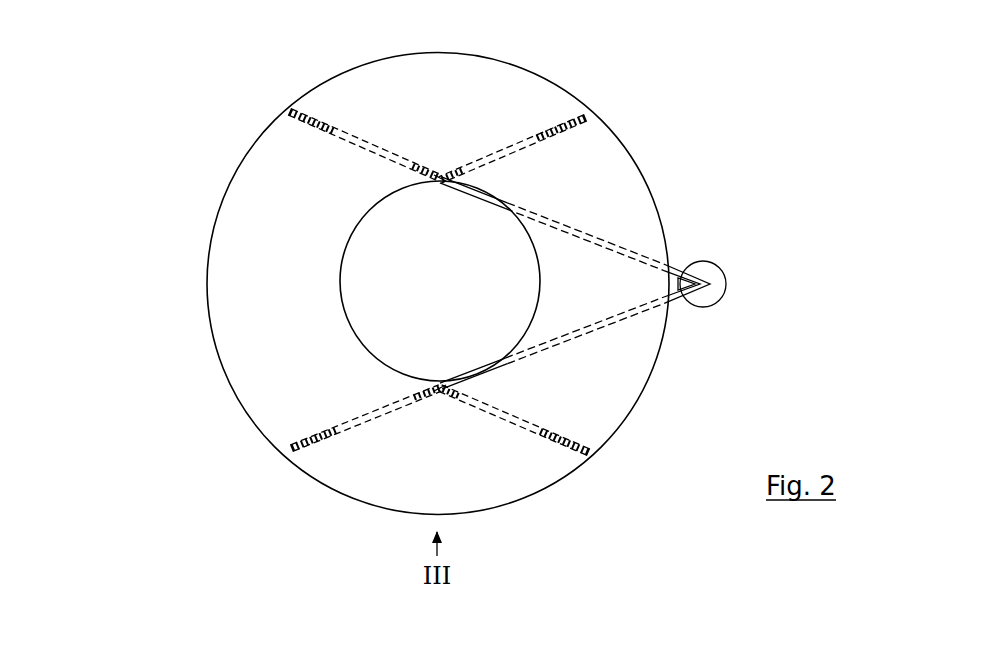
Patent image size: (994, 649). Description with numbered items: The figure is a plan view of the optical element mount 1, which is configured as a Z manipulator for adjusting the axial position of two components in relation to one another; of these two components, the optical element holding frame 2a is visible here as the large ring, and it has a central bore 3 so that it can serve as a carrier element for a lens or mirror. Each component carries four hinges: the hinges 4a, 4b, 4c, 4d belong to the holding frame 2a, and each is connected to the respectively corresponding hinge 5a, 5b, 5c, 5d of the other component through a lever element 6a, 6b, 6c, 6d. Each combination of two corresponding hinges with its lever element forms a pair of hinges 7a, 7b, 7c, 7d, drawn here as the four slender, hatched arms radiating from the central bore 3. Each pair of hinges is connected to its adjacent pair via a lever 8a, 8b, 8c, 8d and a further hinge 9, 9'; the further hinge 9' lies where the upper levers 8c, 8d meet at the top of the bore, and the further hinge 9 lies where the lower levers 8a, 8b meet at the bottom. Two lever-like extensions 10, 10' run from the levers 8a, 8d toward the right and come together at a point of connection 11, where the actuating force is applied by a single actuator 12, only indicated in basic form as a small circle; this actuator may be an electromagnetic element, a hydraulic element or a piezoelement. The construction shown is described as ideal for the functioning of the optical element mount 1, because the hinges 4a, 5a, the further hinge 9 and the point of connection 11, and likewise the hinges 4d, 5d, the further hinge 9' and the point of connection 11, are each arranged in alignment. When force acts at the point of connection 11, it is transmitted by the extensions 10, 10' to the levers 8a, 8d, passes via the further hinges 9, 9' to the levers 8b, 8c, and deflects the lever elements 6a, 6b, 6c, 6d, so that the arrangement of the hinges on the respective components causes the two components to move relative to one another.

The optical element mount 1 is at (432, 282).
The optical element holding frame 2a is at (223, 281).
The central bore 3 is at (447, 298).
The hinge 4a is at (318, 447).
The hinge 4b is at (585, 447).
The hinge 4c is at (578, 120).
The hinge 4d is at (300, 120).
The hinge 5a is at (340, 440).
The hinge 5b is at (542, 432).
The hinge 5c is at (545, 133).
The hinge 5d is at (338, 120).
The lever element 6a is at (330, 445).
The lever element 6b is at (563, 435).
The lever element 6c is at (556, 128).
The lever element 6d is at (325, 130).
The pair of hinges 7a is at (300, 428).
The pair of hinges 7b is at (578, 455).
The pair of hinges 7c is at (578, 134).
The pair of hinges 7d is at (306, 128).
The lever 8a is at (385, 411).
The lever 8b is at (510, 420).
The lever 8c is at (482, 150).
The lever 8d is at (385, 136).
The further hinge 9 is at (401, 473).
The further hinge 9' is at (419, 90).
The lever-like extension 10 is at (624, 343).
The lever-like extension 10' is at (627, 219).
The point of connection 11 is at (706, 283).
The actuator 12 is at (716, 292).